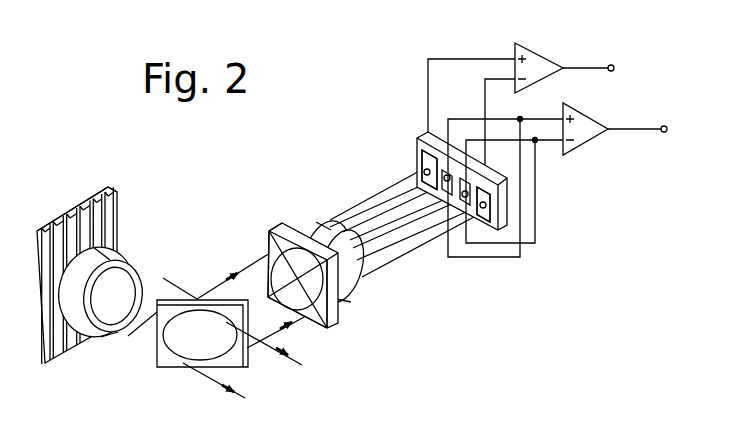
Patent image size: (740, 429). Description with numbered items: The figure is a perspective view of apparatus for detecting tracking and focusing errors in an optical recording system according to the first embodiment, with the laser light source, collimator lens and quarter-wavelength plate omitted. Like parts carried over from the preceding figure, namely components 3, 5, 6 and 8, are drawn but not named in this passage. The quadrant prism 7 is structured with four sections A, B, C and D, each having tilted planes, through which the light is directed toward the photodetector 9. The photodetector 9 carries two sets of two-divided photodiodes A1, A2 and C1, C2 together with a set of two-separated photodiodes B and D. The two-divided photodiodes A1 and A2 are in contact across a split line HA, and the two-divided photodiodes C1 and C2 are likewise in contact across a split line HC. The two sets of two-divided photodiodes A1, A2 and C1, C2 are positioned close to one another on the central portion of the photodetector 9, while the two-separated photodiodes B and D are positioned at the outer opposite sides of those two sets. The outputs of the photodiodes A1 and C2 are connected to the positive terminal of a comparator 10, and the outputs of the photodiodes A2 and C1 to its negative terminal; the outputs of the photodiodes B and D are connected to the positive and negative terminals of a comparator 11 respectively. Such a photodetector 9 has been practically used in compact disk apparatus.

The light source / laser 3 is at (237, 360).
The lens 5 is at (143, 250).
The diffraction grating 6 is at (83, 203).
The quadrant prism 7 is at (270, 233).
The lens 8 is at (320, 225).
The photodetector 9 is at (503, 210).
The comparator 10 is at (590, 118).
The comparator 11 is at (541, 58).
The section of quadrant prism A is at (282, 242).
The section of quadrant prism / two-separated photodiode B is at (268, 249).
The section of quadrant prism C is at (305, 327).
The section of quadrant prism / two-separated photodiode D is at (327, 312).
The two-divided photodiode A1 is at (438, 153).
The two-divided photodiode A2 is at (445, 195).
The split line HA is at (470, 152).
The split line HC is at (490, 200).
The two-divided photodiode C1 is at (477, 190).
The two-divided photodiode C2 is at (467, 205).